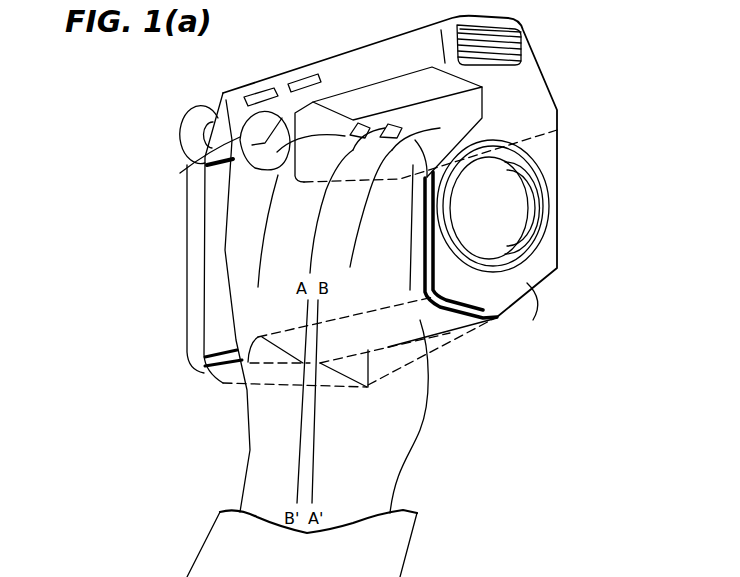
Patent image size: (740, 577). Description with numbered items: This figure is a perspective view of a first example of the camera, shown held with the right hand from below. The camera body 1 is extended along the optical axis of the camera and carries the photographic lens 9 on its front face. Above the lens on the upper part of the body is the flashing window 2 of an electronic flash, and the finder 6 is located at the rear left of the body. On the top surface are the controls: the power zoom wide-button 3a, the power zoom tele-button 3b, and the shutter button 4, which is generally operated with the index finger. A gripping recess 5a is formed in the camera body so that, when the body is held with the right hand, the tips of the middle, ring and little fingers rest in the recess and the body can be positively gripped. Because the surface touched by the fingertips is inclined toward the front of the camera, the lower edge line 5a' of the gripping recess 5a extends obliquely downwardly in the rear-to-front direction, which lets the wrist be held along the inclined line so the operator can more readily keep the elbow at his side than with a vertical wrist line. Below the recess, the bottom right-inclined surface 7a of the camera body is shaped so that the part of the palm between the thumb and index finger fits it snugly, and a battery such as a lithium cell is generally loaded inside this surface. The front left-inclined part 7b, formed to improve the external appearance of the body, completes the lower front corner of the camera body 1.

The camera body 1 is at (557, 207).
The flashing window 2 is at (520, 44).
The power zoom wide-button 3a is at (260, 92).
The power zoom tele-button 3b is at (304, 80).
The shutter button 4 is at (207, 163).
The gripping recess 5a is at (453, 122).
The lower edge line of the gripping recess 5a' is at (451, 153).
The finder 6 is at (187, 137).
The bottom right-inclined surface 7a is at (440, 322).
The front left-inclined part 7b is at (537, 303).
The photographic lens 9 is at (520, 235).